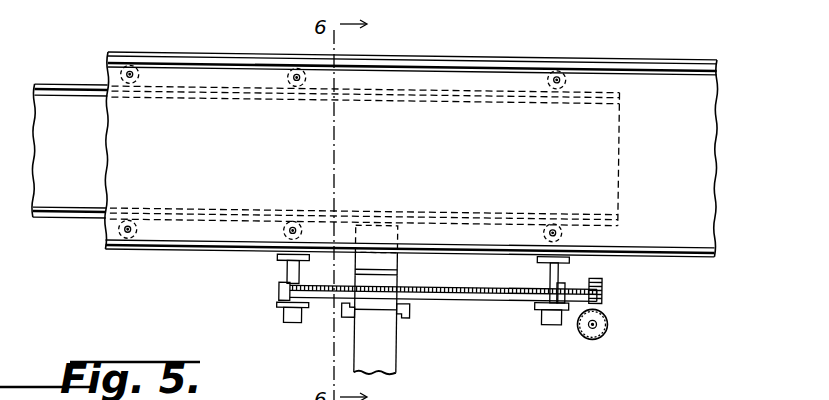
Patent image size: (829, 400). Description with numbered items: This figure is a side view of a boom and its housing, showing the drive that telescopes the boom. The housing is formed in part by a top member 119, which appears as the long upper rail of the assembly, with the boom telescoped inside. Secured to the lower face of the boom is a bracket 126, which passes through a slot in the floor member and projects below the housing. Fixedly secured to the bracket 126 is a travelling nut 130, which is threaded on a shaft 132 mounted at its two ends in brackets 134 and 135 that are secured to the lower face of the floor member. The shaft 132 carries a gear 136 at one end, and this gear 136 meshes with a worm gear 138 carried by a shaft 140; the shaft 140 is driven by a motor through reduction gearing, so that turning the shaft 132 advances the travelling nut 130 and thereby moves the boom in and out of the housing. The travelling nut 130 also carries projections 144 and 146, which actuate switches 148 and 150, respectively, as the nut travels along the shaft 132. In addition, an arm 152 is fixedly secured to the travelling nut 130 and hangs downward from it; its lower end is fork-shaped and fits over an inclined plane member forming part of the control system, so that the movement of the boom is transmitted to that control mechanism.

The top member 119 is at (637, 55).
The bracket 126 is at (396, 258).
The travelling nut 130 is at (430, 281).
The shaft 132 is at (522, 296).
The bracket 134 is at (573, 254).
The bracket 135 is at (285, 257).
The gear 136 is at (606, 277).
The worm gear 138 is at (612, 326).
The shaft 140 is at (593, 330).
The projection 144 is at (347, 314).
The projection 146 is at (406, 301).
The switch 148 is at (292, 320).
The switch 150 is at (560, 320).
The arm 152 is at (391, 353).